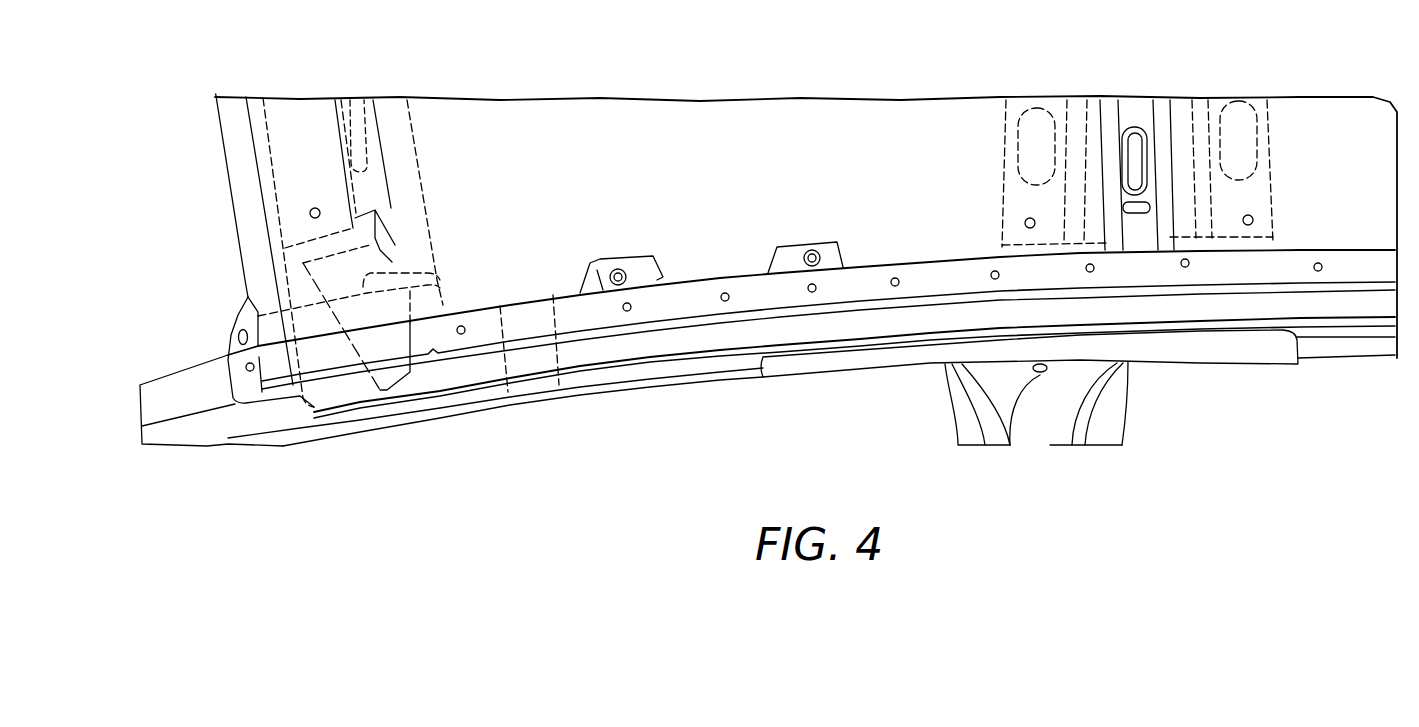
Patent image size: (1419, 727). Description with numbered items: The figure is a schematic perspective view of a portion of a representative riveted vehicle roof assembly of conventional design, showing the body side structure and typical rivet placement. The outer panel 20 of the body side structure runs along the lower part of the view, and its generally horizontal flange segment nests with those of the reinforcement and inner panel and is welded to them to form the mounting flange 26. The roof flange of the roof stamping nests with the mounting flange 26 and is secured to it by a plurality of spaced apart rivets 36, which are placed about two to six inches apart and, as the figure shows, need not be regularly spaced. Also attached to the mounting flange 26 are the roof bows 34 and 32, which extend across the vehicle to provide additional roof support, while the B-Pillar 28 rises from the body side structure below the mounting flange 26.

The outer panel 20 is at (617, 352).
The mounting flange 26 is at (1205, 265).
The B-Pillar 28 is at (1112, 432).
The roof bow 32 is at (1263, 190).
The roof bow 34 is at (413, 223).
The rivet 36 is at (461, 326).